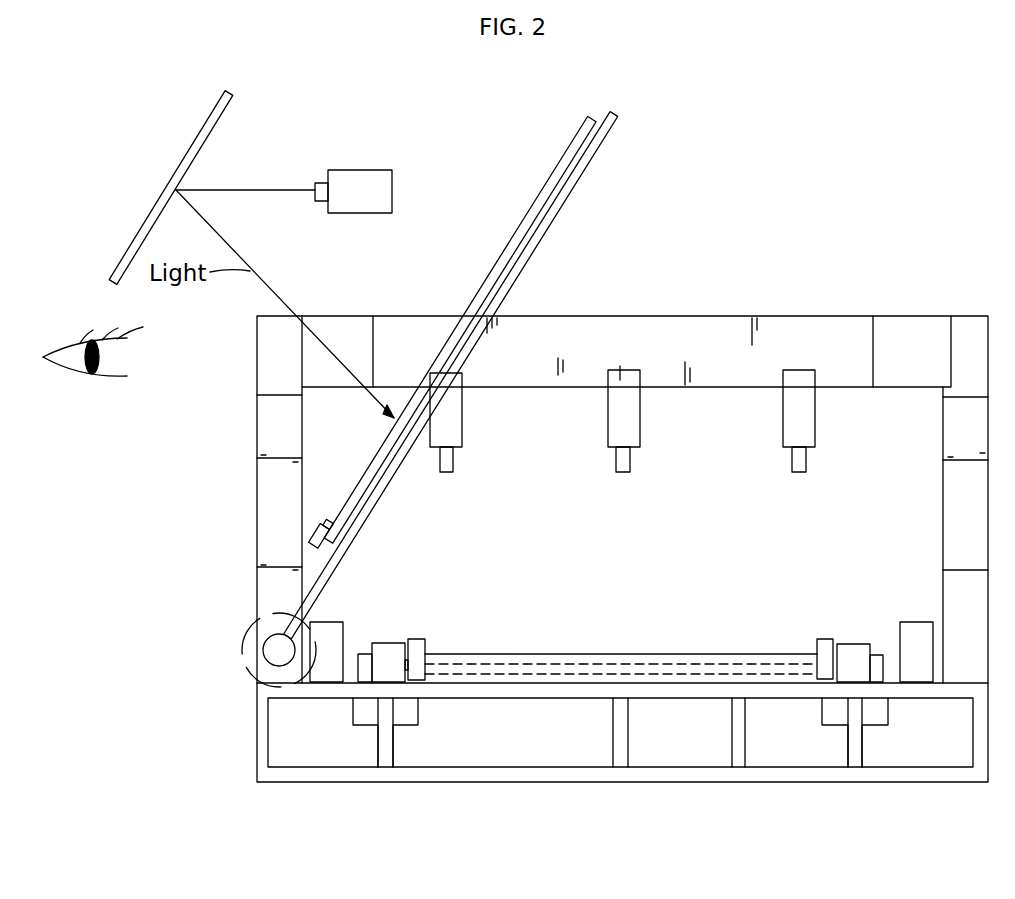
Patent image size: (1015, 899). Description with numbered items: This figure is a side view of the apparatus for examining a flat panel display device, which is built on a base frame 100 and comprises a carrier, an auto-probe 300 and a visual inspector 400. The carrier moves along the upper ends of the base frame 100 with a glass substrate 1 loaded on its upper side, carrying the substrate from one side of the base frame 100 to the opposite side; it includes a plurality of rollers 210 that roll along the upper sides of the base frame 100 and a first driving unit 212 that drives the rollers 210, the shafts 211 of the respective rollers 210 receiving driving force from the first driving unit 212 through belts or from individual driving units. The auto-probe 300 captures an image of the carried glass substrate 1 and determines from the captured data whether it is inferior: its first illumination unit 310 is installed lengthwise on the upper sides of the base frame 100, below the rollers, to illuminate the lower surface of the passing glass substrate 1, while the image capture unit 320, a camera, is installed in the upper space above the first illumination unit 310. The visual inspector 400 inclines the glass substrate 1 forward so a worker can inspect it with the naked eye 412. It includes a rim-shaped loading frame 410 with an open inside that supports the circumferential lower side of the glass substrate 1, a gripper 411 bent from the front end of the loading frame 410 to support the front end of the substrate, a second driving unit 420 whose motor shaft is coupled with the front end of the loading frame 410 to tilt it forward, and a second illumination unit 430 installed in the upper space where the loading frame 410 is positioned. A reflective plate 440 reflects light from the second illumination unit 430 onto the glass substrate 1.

The glass substrate 1 is at (547, 184).
The base frame 100 is at (622, 777).
The rollers 210 is at (415, 638).
The shafts 211 is at (403, 657).
The first driving unit 212 is at (407, 716).
The auto-probe 300 is at (791, 306).
The first illumination unit 310 is at (626, 662).
The image capture unit 320 is at (630, 424).
The visual inspector 400 is at (394, 399).
The loading frame 410 is at (531, 255).
The gripper 411 is at (316, 538).
The naked eye 412 is at (100, 378).
The second driving unit 420 is at (242, 650).
The second illumination unit 430 is at (360, 178).
The reflective plate 440 is at (187, 156).